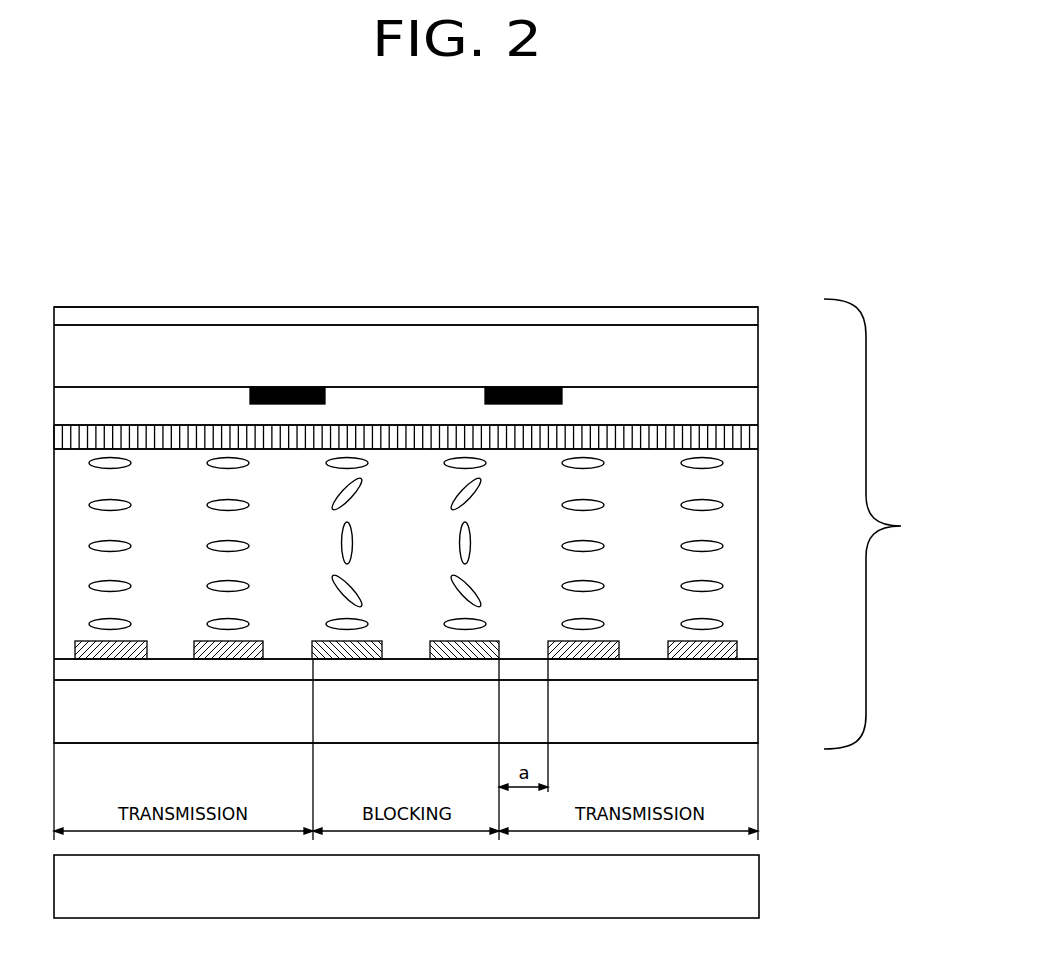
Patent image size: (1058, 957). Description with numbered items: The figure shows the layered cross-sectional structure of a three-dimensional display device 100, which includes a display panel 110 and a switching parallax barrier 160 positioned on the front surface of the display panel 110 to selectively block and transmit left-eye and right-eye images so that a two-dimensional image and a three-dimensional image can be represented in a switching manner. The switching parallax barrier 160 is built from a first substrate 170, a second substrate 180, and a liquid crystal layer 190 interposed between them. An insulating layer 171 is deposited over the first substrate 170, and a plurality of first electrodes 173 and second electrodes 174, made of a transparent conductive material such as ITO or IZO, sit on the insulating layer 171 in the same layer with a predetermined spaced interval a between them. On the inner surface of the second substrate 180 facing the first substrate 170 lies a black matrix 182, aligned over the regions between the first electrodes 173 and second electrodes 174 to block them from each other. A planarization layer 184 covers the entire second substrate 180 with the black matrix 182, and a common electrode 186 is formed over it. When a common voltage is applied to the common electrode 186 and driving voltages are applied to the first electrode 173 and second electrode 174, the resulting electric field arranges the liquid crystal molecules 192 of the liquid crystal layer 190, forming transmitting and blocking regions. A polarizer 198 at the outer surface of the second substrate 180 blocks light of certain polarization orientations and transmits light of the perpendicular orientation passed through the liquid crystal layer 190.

The 3D display device 100 is at (787, 287).
The display panel 110 is at (759, 887).
The switching parallax barrier 160 is at (889, 524).
The first substrate 170 is at (758, 715).
The insulating layer 171 is at (758, 672).
The first electrode 173 is at (380, 641).
The second electrode 174 is at (737, 645).
The second substrate 180 is at (758, 355).
The black matrix 182 is at (522, 387).
The planarization layer 184 is at (758, 410).
The common electrode 186 is at (758, 440).
The liquid crystal layer 190 is at (758, 499).
The liquid crystal molecules 192 is at (723, 546).
The polarizer 198 is at (758, 317).